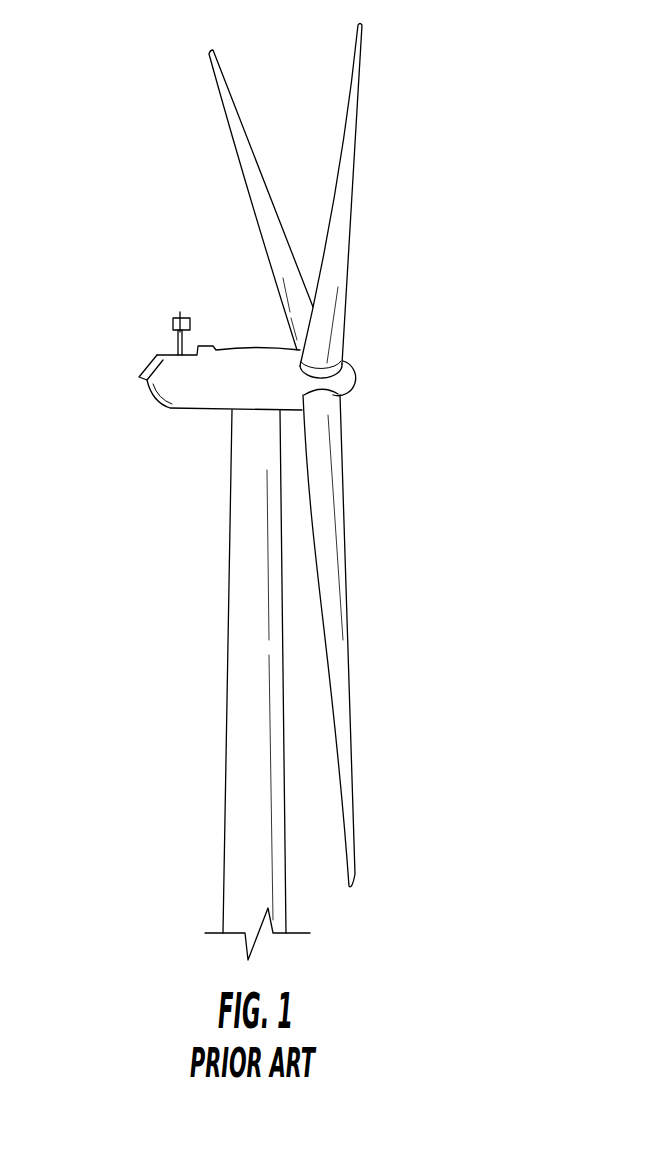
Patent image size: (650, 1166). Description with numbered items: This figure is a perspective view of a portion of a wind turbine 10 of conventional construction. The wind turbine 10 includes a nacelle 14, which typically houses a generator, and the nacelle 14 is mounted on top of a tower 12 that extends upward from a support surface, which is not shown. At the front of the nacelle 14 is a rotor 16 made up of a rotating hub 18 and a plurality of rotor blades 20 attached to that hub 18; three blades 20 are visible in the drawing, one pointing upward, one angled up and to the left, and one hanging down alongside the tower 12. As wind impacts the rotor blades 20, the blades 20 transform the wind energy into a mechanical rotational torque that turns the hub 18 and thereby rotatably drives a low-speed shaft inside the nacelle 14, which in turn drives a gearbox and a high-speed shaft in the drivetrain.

The wind turbine 10 is at (105, 132).
The tower 12 is at (228, 728).
The nacelle 14 is at (191, 426).
The rotor 16 is at (458, 275).
The rotating hub 18 is at (355, 388).
The rotor blades 20 is at (262, 177).